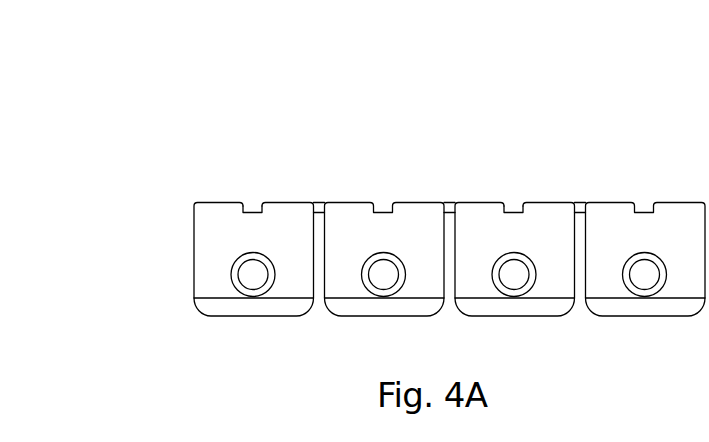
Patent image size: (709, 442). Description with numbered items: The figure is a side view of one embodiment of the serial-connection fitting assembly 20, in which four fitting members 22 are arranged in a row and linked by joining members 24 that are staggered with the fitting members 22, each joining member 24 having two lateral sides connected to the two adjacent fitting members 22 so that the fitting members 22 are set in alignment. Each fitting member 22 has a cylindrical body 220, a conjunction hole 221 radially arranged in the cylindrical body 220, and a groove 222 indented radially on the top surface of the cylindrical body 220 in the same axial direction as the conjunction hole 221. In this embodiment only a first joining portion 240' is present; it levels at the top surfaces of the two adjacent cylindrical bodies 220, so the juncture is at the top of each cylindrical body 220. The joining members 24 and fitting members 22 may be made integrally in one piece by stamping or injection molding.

The serial-connection fitting assembly 20 is at (515, 155).
The fitting member 22 is at (373, 327).
The cylindrical body 220 is at (203, 240).
The conjunction hole 221 is at (253, 274).
The groove 222 is at (253, 205).
The joining member 24 is at (449, 198).
The first joining portion 240' is at (343, 155).